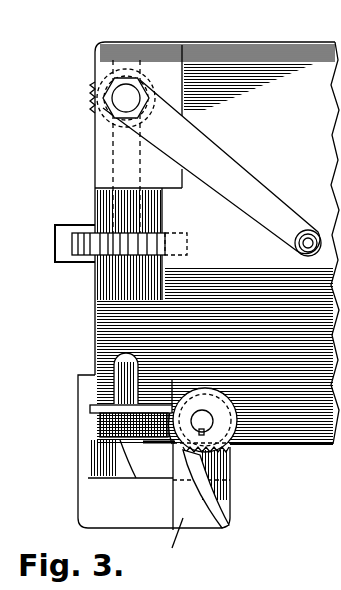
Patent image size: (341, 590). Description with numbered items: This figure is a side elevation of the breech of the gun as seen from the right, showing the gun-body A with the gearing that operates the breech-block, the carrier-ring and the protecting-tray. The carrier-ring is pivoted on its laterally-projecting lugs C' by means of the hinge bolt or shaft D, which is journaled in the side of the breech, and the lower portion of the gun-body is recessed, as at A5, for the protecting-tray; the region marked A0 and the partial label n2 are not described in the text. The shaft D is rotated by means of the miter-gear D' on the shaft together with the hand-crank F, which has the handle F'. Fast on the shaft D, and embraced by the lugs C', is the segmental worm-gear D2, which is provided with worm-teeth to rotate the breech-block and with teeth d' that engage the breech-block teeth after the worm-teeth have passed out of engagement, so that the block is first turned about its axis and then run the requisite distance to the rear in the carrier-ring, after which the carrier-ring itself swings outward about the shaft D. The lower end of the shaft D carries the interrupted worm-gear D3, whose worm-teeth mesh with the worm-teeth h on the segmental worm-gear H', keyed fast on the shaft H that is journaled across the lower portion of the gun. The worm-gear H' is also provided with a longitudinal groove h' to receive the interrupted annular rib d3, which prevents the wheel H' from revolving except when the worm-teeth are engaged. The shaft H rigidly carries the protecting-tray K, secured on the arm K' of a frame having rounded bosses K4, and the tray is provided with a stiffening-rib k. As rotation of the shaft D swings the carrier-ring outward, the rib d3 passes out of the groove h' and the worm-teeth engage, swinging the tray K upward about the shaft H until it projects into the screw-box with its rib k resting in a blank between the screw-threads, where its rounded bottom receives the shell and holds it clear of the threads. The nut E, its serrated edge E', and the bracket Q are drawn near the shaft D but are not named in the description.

The gun-body A is at (218, 243).
The top flange of body A0 is at (173, 60).
The recess A5 is at (160, 392).
The miter-gear D' is at (127, 191).
The lugs C' is at (124, 245).
The hand-crank F is at (211, 167).
The handle F' is at (308, 222).
The bolt E is at (98, 89).
The serrated nut edge E' is at (65, 97).
The bracket Q is at (57, 245).
The segmental worm-gear D2 is at (187, 244).
The teeth d' is at (111, 228).
The hinge bolt or shaft D is at (95, 373).
The interrupted annular rib d3 is at (88, 412).
The interrupted worm-gear D3 is at (110, 425).
The protecting-tray K is at (131, 451).
The arm K' is at (159, 485).
The stiffening-rib k is at (122, 452).
The shaft H is at (235, 433).
The segmental worm-gear H' is at (227, 446).
The rounded bosses K4 is at (215, 460).
The worm-teeth h is at (207, 504).
The longitudinal groove h' is at (175, 549).
The partial label n2 is at (284, 580).